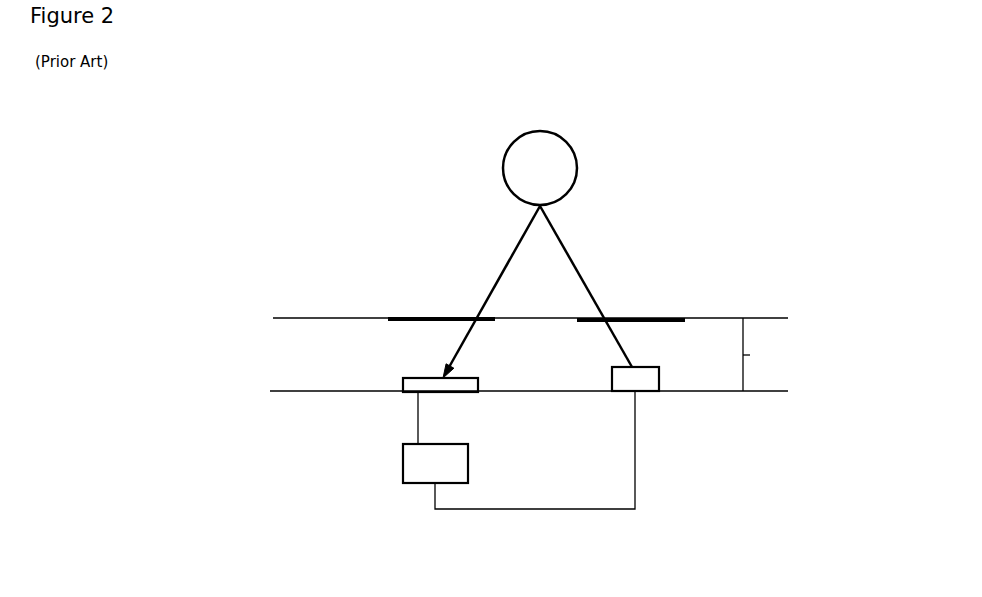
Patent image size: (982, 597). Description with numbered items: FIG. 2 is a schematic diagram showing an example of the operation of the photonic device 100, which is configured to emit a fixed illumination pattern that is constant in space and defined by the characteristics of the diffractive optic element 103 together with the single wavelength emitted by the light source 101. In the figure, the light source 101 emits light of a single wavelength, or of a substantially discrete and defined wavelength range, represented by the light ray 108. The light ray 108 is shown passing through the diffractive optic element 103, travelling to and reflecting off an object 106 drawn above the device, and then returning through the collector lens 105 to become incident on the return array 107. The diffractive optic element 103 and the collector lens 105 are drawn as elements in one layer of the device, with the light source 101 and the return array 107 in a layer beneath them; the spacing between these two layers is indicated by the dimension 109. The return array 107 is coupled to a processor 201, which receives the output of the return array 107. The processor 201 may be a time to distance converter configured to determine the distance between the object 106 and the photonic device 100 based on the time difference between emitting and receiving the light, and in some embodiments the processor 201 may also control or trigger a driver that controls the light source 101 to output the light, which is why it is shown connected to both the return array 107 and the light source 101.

The photonic device 100 is at (822, 352).
The light source 101 is at (648, 391).
The diffractive optic element 103 is at (645, 317).
The collector lens 105 is at (423, 317).
The object 106 is at (567, 142).
The return array 107 is at (441, 392).
The light ray 108 is at (565, 243).
The gap distance 109 is at (767, 354).
The processor 201 is at (403, 464).